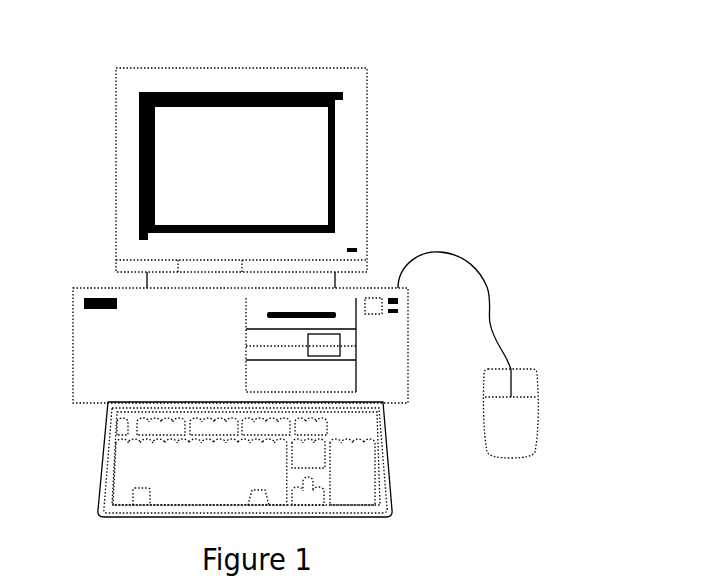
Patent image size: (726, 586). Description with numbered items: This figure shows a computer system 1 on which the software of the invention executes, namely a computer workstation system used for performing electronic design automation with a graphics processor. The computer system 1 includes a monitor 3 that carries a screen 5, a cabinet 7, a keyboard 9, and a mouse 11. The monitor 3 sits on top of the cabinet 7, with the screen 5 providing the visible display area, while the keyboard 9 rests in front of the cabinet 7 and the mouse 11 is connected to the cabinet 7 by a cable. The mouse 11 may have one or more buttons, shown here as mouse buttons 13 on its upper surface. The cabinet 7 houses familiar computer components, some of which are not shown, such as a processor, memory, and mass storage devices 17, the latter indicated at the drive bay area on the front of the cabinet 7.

The computer system 1 is at (380, 54).
The monitor 3 is at (368, 147).
The screen 5 is at (170, 158).
The cabinet 7 is at (98, 290).
The keyboard 9 is at (140, 519).
The mouse 11 is at (511, 445).
The mouse buttons 13 is at (523, 385).
The mass storage devices 17 is at (347, 300).